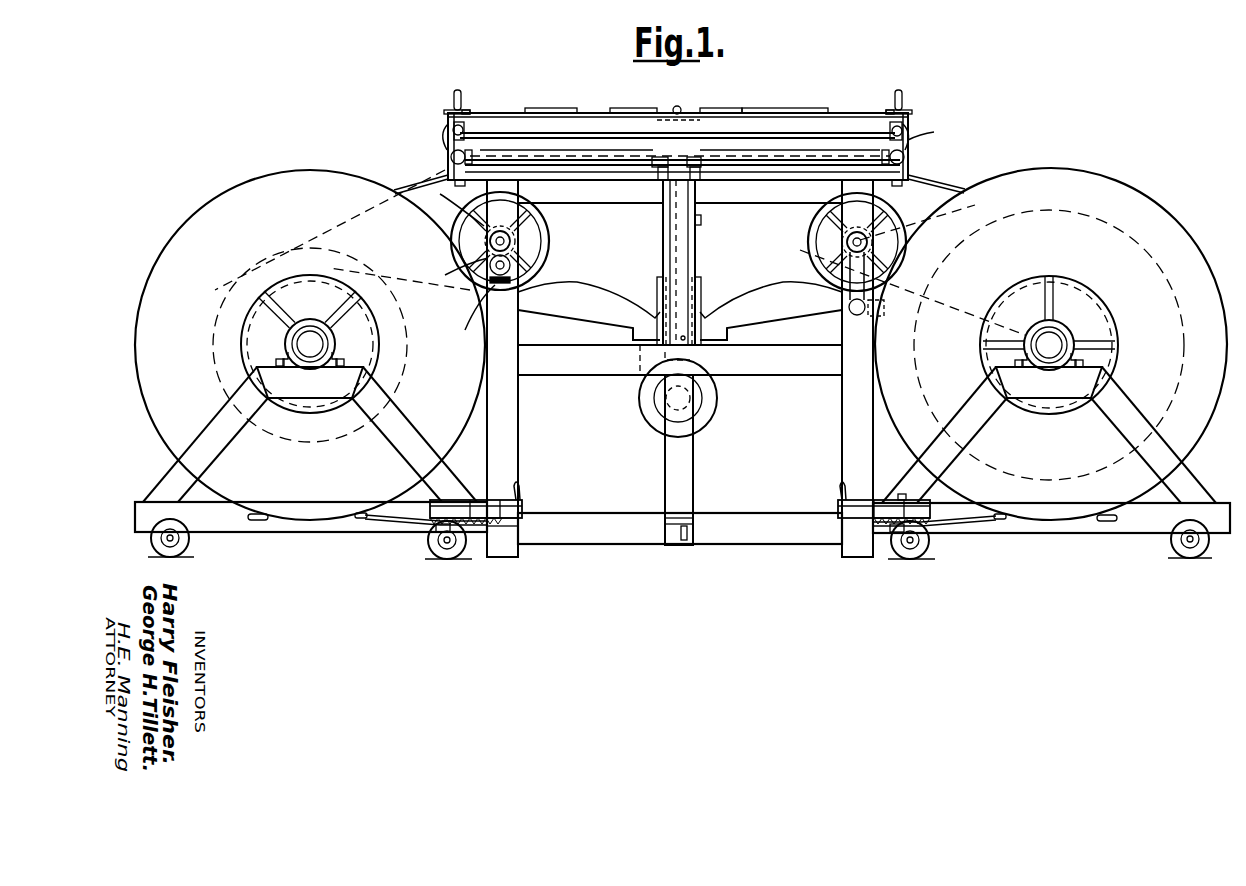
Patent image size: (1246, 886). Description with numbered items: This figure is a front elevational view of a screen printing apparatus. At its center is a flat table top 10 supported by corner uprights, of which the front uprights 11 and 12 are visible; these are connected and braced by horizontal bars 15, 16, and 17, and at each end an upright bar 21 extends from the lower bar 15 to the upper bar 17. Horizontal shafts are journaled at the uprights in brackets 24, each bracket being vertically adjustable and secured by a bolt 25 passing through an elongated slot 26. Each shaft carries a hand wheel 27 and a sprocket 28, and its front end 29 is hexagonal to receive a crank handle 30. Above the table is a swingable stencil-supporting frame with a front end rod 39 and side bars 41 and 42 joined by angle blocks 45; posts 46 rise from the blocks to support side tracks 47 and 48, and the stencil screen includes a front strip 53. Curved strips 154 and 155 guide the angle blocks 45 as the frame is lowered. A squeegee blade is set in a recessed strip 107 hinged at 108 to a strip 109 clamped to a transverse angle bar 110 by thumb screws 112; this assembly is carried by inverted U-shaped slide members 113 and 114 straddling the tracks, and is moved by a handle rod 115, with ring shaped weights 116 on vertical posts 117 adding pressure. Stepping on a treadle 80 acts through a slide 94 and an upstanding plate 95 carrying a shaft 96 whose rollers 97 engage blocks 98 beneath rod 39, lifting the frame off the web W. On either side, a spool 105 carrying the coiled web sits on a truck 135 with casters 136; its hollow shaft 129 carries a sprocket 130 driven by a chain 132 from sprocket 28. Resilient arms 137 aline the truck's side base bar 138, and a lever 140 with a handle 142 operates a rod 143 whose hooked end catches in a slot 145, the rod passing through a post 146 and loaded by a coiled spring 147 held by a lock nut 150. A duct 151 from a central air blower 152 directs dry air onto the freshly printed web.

The table top 10 is at (762, 206).
The front upright 11 is at (508, 422).
The front upright 12 is at (850, 416).
The lower horizontal bar 15 is at (582, 518).
The horizontal bar 16 is at (615, 372).
The upper horizontal bar 17 is at (640, 206).
The upright bar 21 is at (692, 456).
The bracket 24 is at (512, 265).
The bolt 25 is at (492, 280).
The elongated slot 26 is at (498, 290).
The hand wheel 27 is at (480, 260).
The sprocket 28 is at (812, 246).
The front shaft end 29 is at (512, 233).
The crank handle 30 is at (848, 268).
The front end rod 39 is at (820, 172).
The side bar 41 is at (905, 148).
The side bar 42 is at (450, 158).
The angle block 45 is at (450, 150).
The post 46 is at (910, 140).
The side track 47 is at (904, 131).
The side track 48 is at (462, 127).
The front strip 53 is at (840, 158).
The treadle 80 is at (693, 526).
The slide 94 is at (700, 280).
The upstanding plate 95 is at (697, 244).
The short horizontal shaft 96 is at (702, 222).
The roller 97 is at (697, 172).
The block 98 is at (655, 168).
The spool 105 is at (325, 178).
The recessed strip 107 is at (822, 150).
The hinge 108 is at (782, 140).
The strip 109 is at (716, 110).
The transverse angle bar 110 is at (752, 120).
The thumb screw 112 is at (598, 130).
The slide member 113 is at (908, 121).
The slide member 114 is at (447, 120).
The handle rod 115 is at (680, 107).
The ring shaped weight 116 is at (470, 110).
The vertical post 117 is at (461, 94).
The hollow shaft 129 is at (297, 344).
The sprocket 130 is at (1112, 300).
The chain 132 is at (985, 256).
The truck 135 is at (323, 522).
The caster 136 is at (432, 545).
The resilient arm 137 is at (470, 503).
The side base bar 138 is at (484, 528).
The lever 140 is at (512, 524).
The handle 142 is at (521, 488).
The rod 143 is at (392, 524).
The elongated slot 145 is at (259, 522).
The post 146 is at (443, 534).
The coiled spring 147 is at (895, 530).
The lock nut 150 is at (506, 530).
The duct 151 is at (592, 314).
The air blower 152 is at (718, 400).
The curved strip 154 is at (936, 132).
The curved strip 155 is at (445, 132).
The web W is at (958, 194).